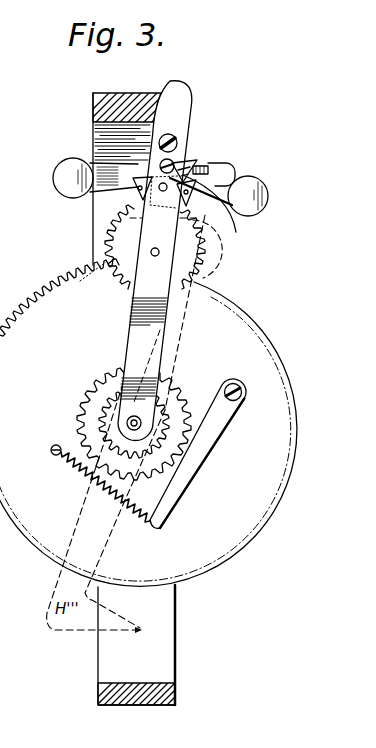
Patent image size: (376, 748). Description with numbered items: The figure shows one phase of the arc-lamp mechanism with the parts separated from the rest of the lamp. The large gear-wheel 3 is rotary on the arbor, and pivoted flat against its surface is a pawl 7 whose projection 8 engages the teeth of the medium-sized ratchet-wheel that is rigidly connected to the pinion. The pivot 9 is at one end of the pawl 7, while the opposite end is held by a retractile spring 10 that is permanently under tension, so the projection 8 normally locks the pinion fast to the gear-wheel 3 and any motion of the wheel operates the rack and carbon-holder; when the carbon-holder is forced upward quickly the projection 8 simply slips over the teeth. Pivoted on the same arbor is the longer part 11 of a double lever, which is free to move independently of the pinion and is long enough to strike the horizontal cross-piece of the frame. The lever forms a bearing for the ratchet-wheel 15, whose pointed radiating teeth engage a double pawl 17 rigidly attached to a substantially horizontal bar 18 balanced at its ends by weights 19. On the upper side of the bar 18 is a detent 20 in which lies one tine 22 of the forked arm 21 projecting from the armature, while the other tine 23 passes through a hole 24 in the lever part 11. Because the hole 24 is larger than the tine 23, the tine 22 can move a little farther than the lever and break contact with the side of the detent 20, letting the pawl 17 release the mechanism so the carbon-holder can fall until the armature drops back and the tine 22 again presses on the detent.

The gear-wheel 3 is at (148, 422).
The pawl 7 is at (216, 447).
The projection 8 is at (186, 448).
The pivot 9 is at (238, 389).
The retractile spring 10 is at (98, 483).
The part of double lever 11 is at (155, 261).
The ratchet-wheel 15 is at (155, 247).
The double pawl 17 is at (138, 188).
The bar 18 is at (114, 177).
The weights 19 is at (58, 182).
The detent 20 is at (236, 181).
The arm 21 is at (213, 212).
The tine 22 is at (203, 174).
The tine 23 is at (162, 165).
The hole 24 is at (180, 162).